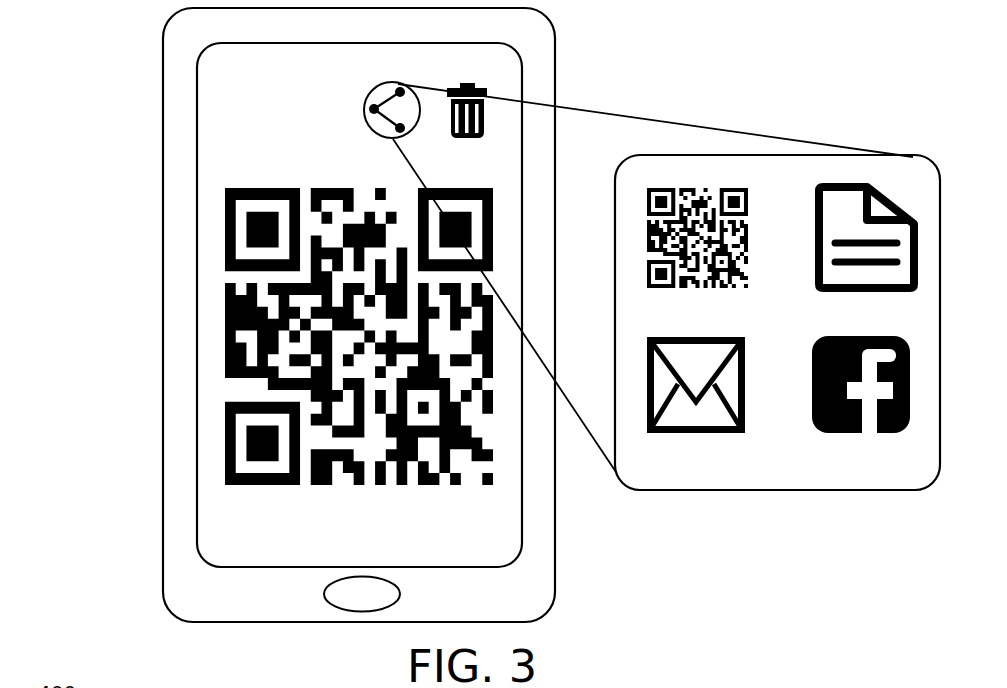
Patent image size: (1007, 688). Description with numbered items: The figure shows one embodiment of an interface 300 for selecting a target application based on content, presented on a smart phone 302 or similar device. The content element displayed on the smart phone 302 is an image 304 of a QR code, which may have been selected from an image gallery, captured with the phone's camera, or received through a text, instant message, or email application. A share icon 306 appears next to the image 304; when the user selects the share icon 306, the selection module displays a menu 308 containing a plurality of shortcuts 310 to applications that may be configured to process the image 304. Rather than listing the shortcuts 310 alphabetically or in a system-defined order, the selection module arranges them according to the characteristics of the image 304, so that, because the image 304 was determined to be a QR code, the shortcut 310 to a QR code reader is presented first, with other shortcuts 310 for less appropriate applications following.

The interface 300 is at (110, 82).
The smart phone 302 is at (164, 124).
The image 304 is at (343, 485).
The share icon 306 is at (366, 112).
The menu 308 is at (753, 346).
The shortcuts 310 is at (648, 239).